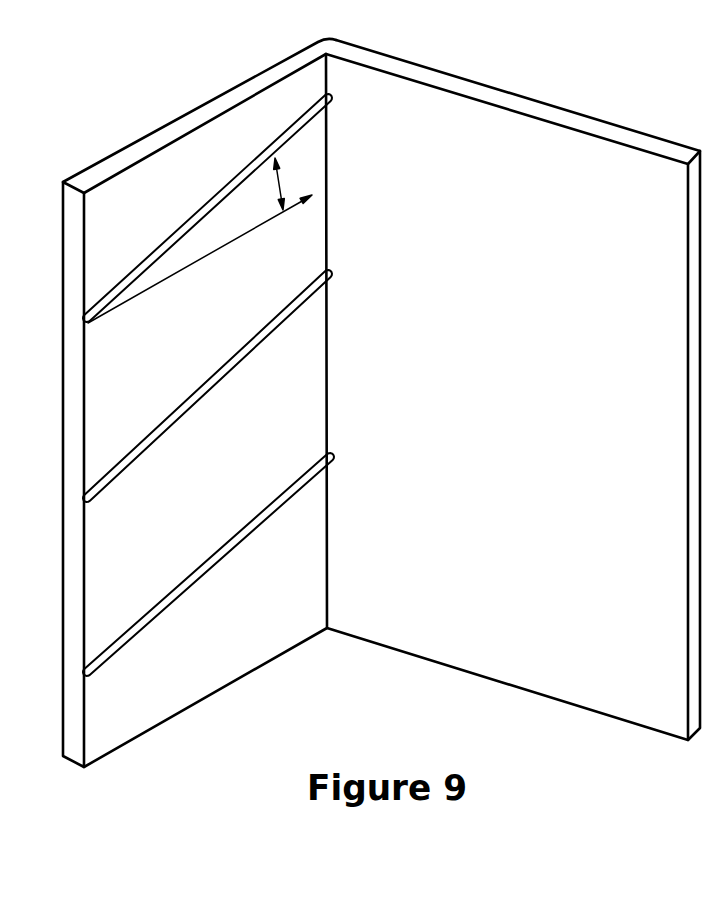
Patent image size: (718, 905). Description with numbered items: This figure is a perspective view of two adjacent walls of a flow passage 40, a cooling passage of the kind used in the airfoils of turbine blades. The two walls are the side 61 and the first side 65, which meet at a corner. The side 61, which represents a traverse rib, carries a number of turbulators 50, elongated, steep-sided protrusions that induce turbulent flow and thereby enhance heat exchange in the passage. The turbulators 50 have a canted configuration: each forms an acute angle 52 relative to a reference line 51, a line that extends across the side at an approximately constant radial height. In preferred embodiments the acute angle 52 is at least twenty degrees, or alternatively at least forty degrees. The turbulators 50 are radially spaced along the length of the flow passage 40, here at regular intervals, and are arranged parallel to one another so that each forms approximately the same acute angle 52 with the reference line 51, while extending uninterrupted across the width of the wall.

The flow passage 40 is at (381, 398).
The turbulator 50 is at (137, 270).
The reference line 51 is at (168, 280).
The acute angle 52 is at (282, 182).
The side 61 is at (207, 112).
The first side 65 is at (487, 97).